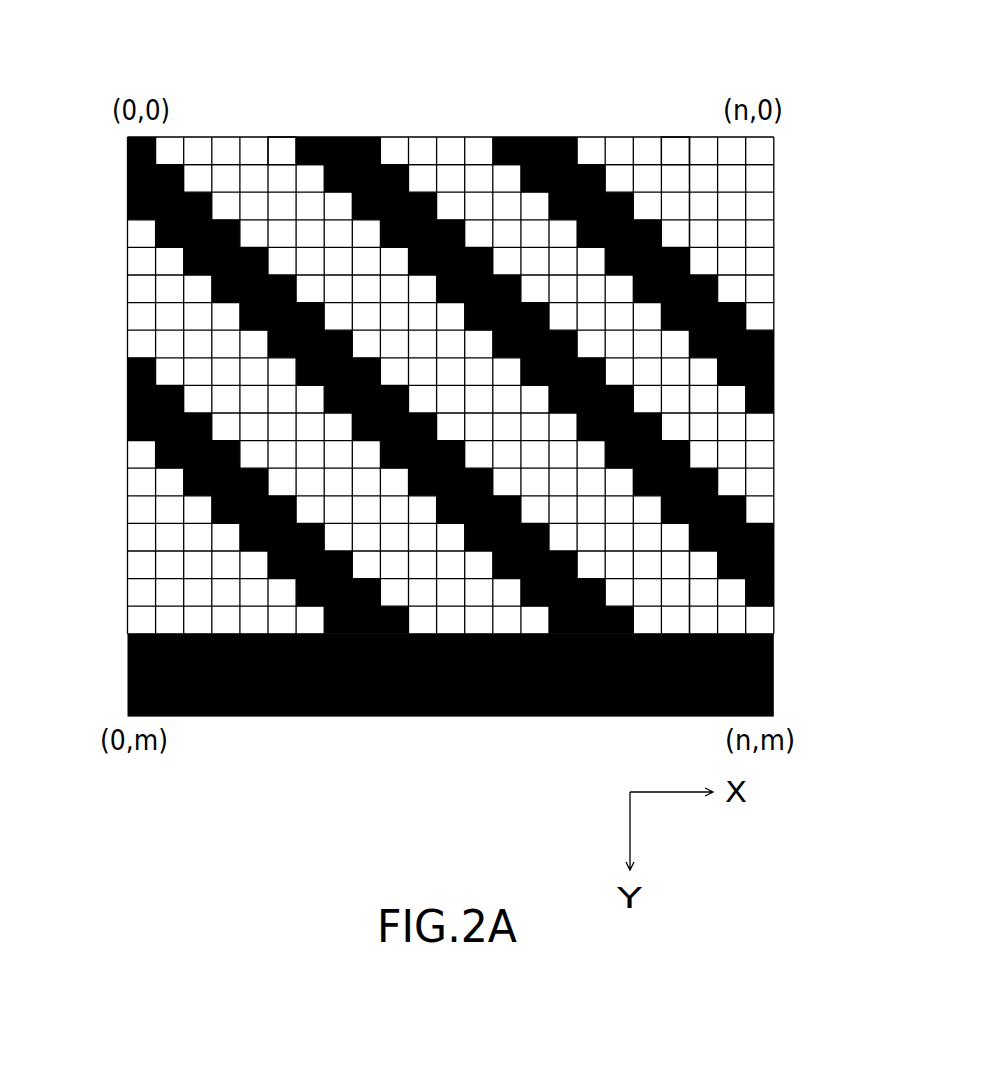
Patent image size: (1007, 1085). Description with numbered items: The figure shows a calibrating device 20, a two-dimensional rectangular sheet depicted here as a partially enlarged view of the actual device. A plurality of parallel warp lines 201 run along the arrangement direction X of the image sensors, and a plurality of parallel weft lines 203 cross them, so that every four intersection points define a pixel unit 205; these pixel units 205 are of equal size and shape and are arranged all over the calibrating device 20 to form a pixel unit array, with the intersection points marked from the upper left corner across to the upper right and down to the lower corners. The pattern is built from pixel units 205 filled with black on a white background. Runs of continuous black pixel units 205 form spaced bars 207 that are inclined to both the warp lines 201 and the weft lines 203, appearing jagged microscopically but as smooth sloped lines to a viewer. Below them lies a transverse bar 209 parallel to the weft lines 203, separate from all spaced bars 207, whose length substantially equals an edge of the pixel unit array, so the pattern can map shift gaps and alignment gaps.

The calibrating device 20 is at (804, 112).
The warp line 201 is at (690, 137).
The weft line 203 is at (774, 167).
The pixel unit 205 is at (302, 137).
The spaced bar 207 is at (372, 126).
The transverse bar 209 is at (118, 680).